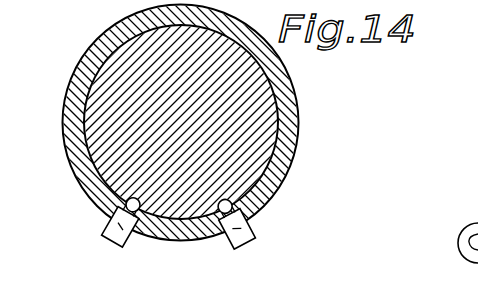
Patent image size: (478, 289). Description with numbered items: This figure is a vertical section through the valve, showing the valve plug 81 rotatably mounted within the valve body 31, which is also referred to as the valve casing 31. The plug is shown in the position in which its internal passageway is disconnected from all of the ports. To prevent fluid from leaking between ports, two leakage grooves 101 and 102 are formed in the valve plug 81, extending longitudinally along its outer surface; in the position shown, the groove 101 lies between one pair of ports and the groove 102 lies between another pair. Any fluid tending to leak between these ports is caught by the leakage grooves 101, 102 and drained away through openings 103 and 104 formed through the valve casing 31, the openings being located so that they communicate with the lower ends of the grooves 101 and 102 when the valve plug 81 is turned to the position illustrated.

The valve body 31 is at (289, 100).
The valve plug 81 is at (247, 124).
The leakage groove 101 is at (243, 203).
The leakage groove 102 is at (124, 203).
The opening 103 is at (290, 264).
The opening 104 is at (118, 230).